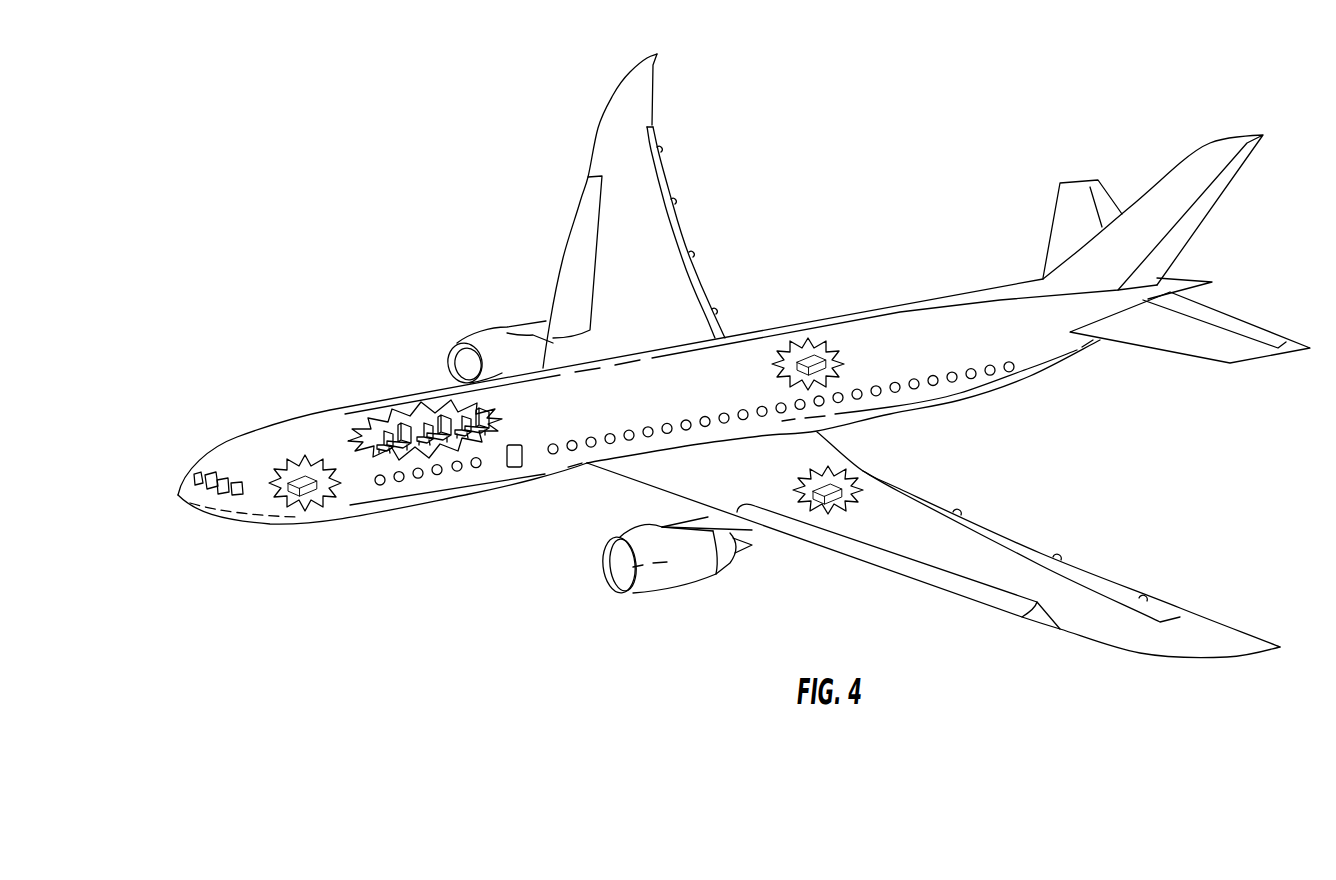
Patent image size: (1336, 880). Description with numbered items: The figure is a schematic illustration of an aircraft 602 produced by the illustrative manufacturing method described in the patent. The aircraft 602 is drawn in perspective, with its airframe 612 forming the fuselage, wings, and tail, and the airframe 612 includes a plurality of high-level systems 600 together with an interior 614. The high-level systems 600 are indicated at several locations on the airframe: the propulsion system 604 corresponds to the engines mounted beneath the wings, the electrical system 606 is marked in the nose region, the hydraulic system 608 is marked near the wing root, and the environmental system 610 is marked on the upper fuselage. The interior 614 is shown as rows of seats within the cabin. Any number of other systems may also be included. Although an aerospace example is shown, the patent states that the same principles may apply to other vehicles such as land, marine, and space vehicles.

The high-level systems 600 is at (1155, 497).
The aircraft 602 is at (402, 246).
The propulsion system 604 is at (505, 333).
The electrical system 606 is at (303, 477).
The hydraulic system 608 is at (832, 483).
The environmental system 610 is at (806, 364).
The airframe 612 is at (423, 382).
The interior 614 is at (403, 445).